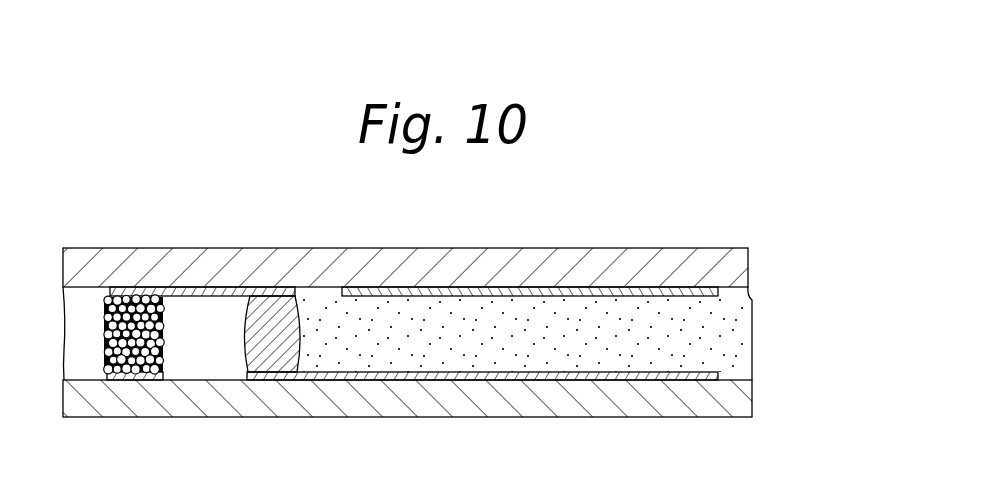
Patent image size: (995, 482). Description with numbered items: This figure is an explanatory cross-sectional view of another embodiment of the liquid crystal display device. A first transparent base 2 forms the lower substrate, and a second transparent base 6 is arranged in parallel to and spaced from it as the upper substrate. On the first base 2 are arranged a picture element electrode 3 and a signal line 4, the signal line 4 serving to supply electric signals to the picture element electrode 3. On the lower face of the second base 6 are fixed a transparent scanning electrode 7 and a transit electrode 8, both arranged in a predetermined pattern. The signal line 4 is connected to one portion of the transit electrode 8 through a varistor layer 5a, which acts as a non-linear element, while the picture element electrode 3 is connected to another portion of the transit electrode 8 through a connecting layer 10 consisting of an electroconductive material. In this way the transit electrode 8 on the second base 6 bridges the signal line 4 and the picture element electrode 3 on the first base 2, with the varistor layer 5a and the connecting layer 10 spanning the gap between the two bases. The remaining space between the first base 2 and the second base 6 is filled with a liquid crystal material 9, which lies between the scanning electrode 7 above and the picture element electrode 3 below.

The first transparent base 2 is at (440, 393).
The picture element electrode 3 is at (560, 374).
The signal line 4 is at (130, 376).
The varistor layer 5a is at (139, 316).
The second transparent base 6 is at (426, 267).
The scanning electrode 7 is at (513, 289).
The transit electrode 8 is at (227, 291).
The liquid crystal material 9 is at (492, 340).
The connecting layer 10 is at (270, 342).